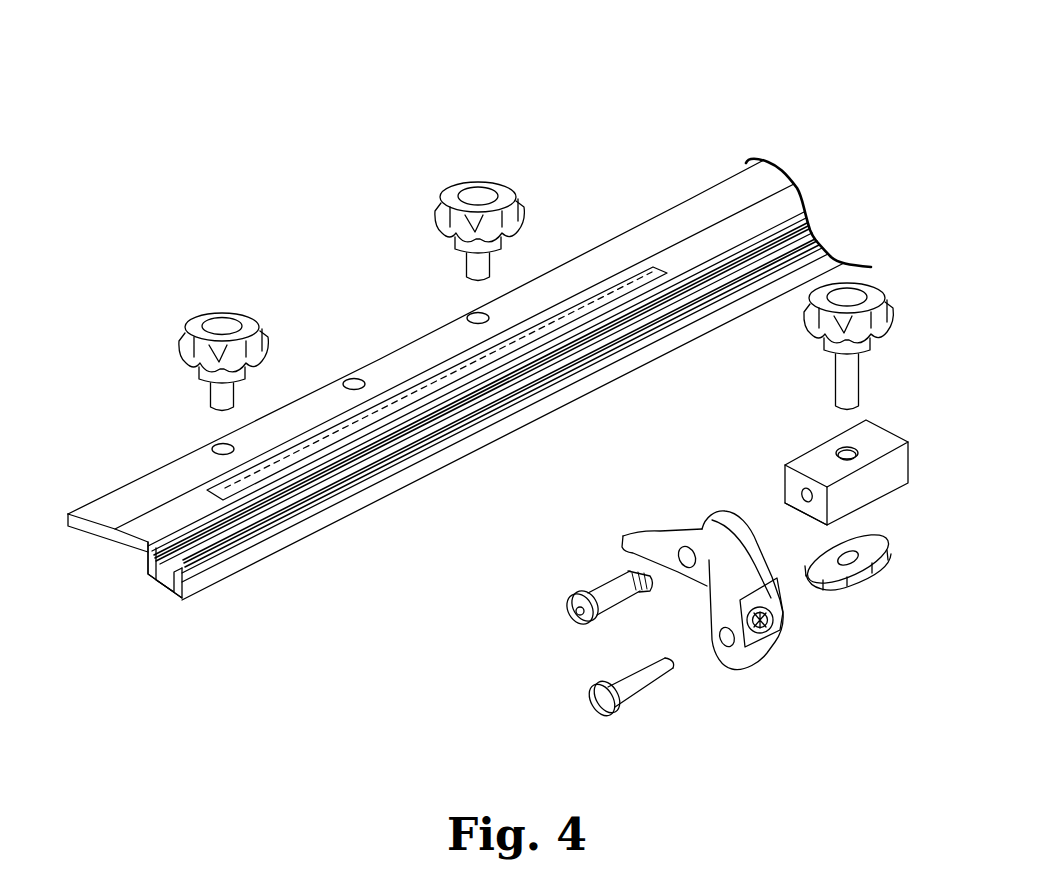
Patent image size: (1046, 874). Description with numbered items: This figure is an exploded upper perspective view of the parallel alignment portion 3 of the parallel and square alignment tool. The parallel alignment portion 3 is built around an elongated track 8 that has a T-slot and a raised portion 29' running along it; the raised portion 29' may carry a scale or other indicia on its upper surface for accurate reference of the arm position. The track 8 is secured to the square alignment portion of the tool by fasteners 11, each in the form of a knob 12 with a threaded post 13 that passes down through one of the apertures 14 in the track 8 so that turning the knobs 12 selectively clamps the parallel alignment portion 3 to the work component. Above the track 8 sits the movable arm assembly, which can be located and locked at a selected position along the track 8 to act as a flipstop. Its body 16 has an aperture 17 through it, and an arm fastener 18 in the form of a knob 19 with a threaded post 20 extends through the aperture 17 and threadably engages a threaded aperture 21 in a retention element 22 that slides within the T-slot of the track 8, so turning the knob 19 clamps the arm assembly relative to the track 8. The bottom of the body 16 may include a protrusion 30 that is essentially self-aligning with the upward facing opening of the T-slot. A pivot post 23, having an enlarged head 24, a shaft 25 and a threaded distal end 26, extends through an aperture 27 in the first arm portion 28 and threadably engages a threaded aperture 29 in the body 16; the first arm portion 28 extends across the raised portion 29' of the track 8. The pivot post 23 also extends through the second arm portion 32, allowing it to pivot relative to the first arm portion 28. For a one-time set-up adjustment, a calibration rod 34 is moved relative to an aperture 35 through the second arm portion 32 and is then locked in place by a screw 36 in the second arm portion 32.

The parallel alignment portion 3 is at (366, 82).
The track 8 is at (700, 207).
The raised portion 29' is at (113, 563).
The fasteners 11 is at (338, 282).
The knobs 12 is at (212, 312).
The threaded posts 13 is at (218, 395).
The apertures 14 is at (210, 449).
The arm fastener 18 is at (848, 331).
The knob 19 is at (807, 314).
The threaded post 20 is at (838, 370).
The body 16 is at (836, 471).
The aperture 17 is at (858, 441).
The threaded aperture 29 is at (769, 480).
The protrusion 30 is at (805, 515).
The threaded aperture 21 is at (892, 550).
The retention element 22 is at (881, 566).
The aperture 27 is at (690, 545).
The first arm portion 28 is at (665, 517).
The second arm portion 32 is at (735, 588).
The aperture 35 is at (726, 650).
The screw 36 is at (760, 634).
The pivot post 23 is at (571, 597).
The enlarged head 24 is at (572, 613).
The shaft 25 is at (612, 598).
The threaded distal end 26 is at (629, 573).
The calibration rod 34 is at (603, 712).